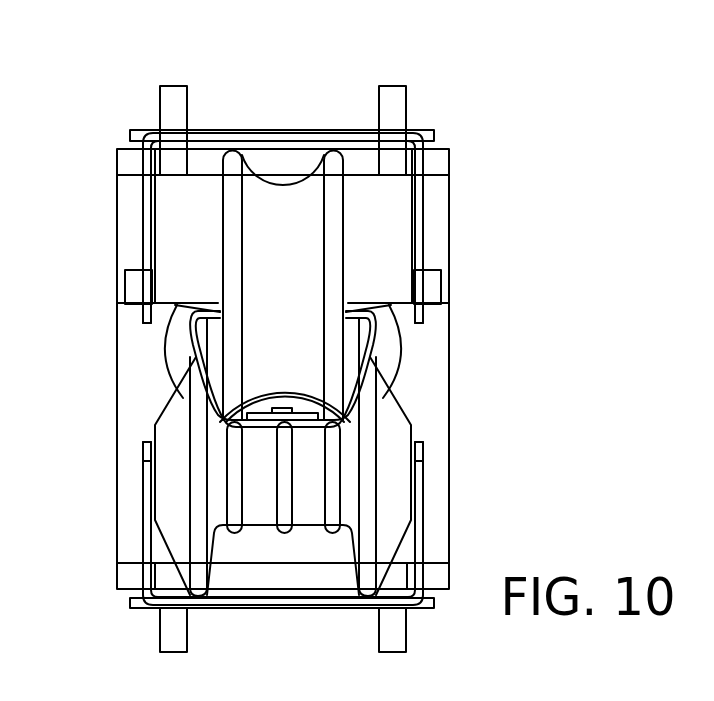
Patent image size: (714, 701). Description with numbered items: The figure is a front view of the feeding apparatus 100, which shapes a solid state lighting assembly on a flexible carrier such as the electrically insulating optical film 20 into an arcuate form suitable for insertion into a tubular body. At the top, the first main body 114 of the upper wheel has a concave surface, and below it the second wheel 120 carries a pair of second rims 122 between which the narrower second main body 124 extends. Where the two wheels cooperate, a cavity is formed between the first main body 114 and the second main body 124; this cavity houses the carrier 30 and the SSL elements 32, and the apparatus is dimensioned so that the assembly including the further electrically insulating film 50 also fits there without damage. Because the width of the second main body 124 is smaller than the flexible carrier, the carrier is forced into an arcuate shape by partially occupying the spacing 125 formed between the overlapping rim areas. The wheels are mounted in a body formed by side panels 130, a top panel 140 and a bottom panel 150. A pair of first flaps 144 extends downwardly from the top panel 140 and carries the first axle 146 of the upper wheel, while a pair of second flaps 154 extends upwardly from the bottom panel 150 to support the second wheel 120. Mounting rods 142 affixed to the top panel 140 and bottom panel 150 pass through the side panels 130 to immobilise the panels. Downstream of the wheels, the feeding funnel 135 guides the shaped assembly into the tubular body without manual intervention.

The feeding apparatus 100 is at (512, 90).
The first main body 114 is at (282, 207).
The top panel 140 is at (341, 132).
The mounting rods 142 is at (392, 97).
The side panels 130 is at (432, 196).
The first flaps 144 is at (415, 232).
The first axle 146 is at (430, 289).
The feeding funnel 135 is at (390, 339).
The spacing 125 is at (346, 352).
The second wheel 120 is at (388, 427).
The second rims 122 is at (367, 492).
The second flaps 154 is at (145, 493).
The bottom panel 150 is at (222, 604).
The second main body 124 is at (283, 532).
The further electrically insulating film 50 is at (290, 408).
The SSL elements 32 is at (289, 400).
The carrier 30 is at (253, 428).
The electrically insulating optical film 20 is at (303, 428).